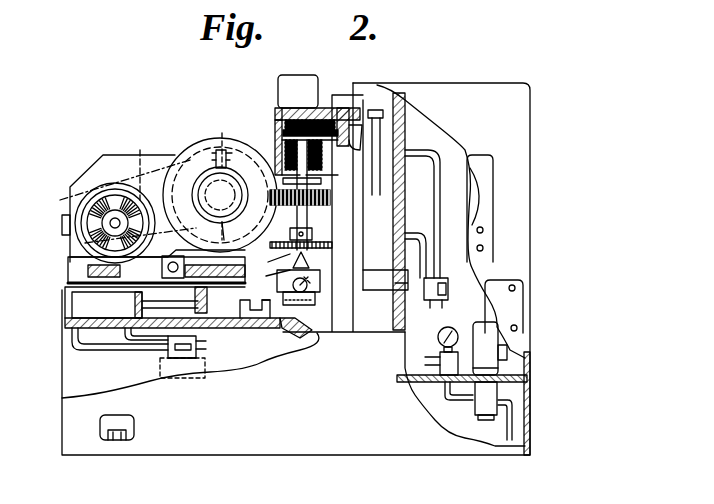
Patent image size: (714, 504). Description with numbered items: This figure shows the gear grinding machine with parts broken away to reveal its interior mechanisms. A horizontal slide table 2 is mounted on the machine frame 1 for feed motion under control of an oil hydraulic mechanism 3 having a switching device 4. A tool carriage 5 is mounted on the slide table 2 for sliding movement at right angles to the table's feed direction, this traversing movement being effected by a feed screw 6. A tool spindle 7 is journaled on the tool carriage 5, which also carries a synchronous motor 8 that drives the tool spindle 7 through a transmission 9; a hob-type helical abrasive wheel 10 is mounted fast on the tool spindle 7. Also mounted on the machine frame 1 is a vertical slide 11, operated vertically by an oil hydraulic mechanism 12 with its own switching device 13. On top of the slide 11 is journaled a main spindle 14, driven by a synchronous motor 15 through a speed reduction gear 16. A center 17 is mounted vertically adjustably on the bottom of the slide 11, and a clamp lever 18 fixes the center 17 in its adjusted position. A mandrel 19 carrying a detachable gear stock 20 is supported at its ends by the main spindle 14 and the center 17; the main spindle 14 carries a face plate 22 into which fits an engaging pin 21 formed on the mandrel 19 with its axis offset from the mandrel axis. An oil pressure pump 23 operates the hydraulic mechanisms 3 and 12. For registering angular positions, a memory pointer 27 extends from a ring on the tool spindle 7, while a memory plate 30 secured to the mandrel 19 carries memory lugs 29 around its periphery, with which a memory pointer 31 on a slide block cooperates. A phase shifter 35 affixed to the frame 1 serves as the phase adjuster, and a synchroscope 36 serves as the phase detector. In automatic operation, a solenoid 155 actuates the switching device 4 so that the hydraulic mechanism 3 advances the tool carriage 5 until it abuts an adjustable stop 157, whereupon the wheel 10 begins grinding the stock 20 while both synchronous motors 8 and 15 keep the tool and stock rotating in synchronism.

The machine frame 1 is at (186, 455).
The horizontal slide table 2 is at (68, 281).
The oil hydraulic mechanism 3 is at (63, 304).
The switching device 4 is at (182, 358).
The tool carriage 5 is at (100, 158).
The feed screw 6 is at (157, 267).
The tool spindle 7 is at (220, 175).
The synchronous motor 8 is at (82, 197).
The transmission 9 is at (136, 165).
The hob-type helical abrasive wheel 10 is at (190, 158).
The vertical slide 11 is at (347, 322).
The oil hydraulic mechanism 12 is at (405, 178).
The switching device 13 is at (447, 282).
The main spindle 14 is at (272, 125).
The synchronous motor 15 is at (308, 85).
The speed reduction gear 16 is at (320, 118).
The center 17 is at (278, 325).
The clamp lever 18 is at (320, 292).
The mandrel 19 is at (292, 229).
The gear stock 20 is at (302, 231).
The engaging pin 21 is at (252, 150).
The face plate 22 is at (302, 195).
The oil pressure pump 23 is at (500, 392).
The memory pointer 27 is at (237, 232).
The memory lugs 29 is at (269, 258).
The memory plate 30 is at (267, 276).
The memory pointer 31 is at (320, 262).
The phase shifter 35 is at (520, 300).
The synchroscope 36 is at (493, 222).
The solenoid 155 is at (172, 372).
The adjustable stop 157 is at (243, 320).